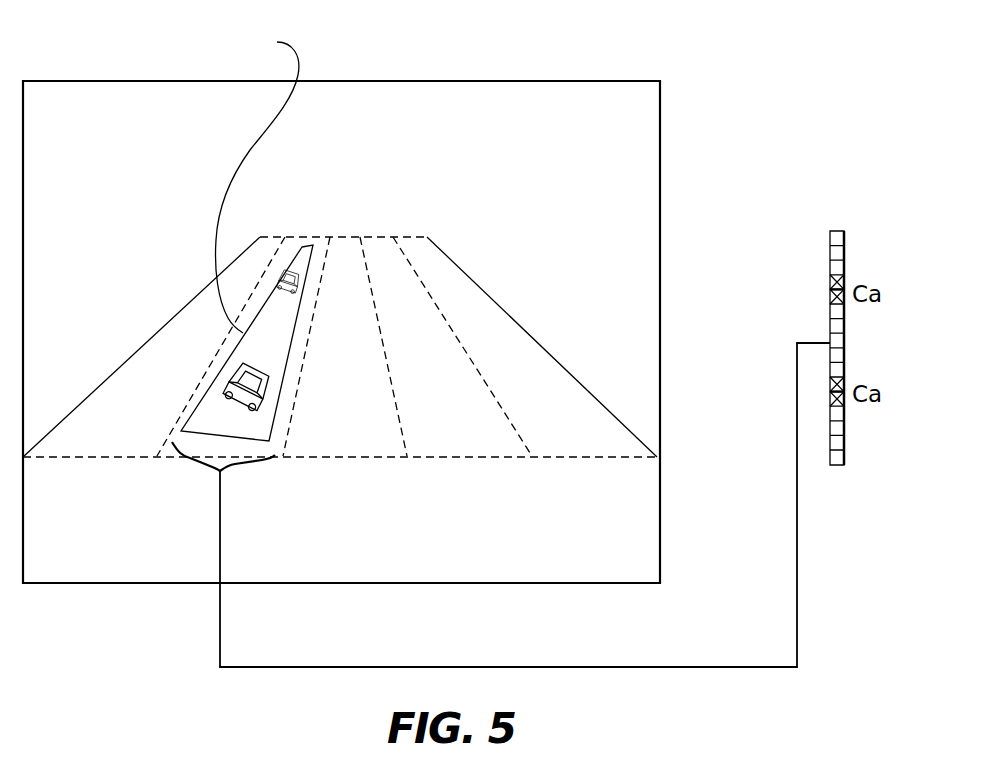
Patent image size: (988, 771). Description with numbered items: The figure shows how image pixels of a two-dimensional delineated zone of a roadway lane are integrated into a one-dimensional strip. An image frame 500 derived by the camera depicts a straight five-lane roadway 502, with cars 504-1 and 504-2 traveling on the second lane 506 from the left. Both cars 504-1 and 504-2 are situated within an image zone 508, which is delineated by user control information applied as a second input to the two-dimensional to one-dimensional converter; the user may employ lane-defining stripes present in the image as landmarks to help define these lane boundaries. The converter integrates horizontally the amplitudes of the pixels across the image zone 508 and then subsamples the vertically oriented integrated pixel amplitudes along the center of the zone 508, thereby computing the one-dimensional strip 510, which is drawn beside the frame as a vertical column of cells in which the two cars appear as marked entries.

The image frame 500 is at (512, 81).
The roadway 502 is at (508, 313).
The car 504-1 is at (267, 387).
The car 504-2 is at (303, 284).
The second lane 506 is at (314, 307).
The image zone 508 is at (293, 342).
The 1D strip 510 is at (830, 247).